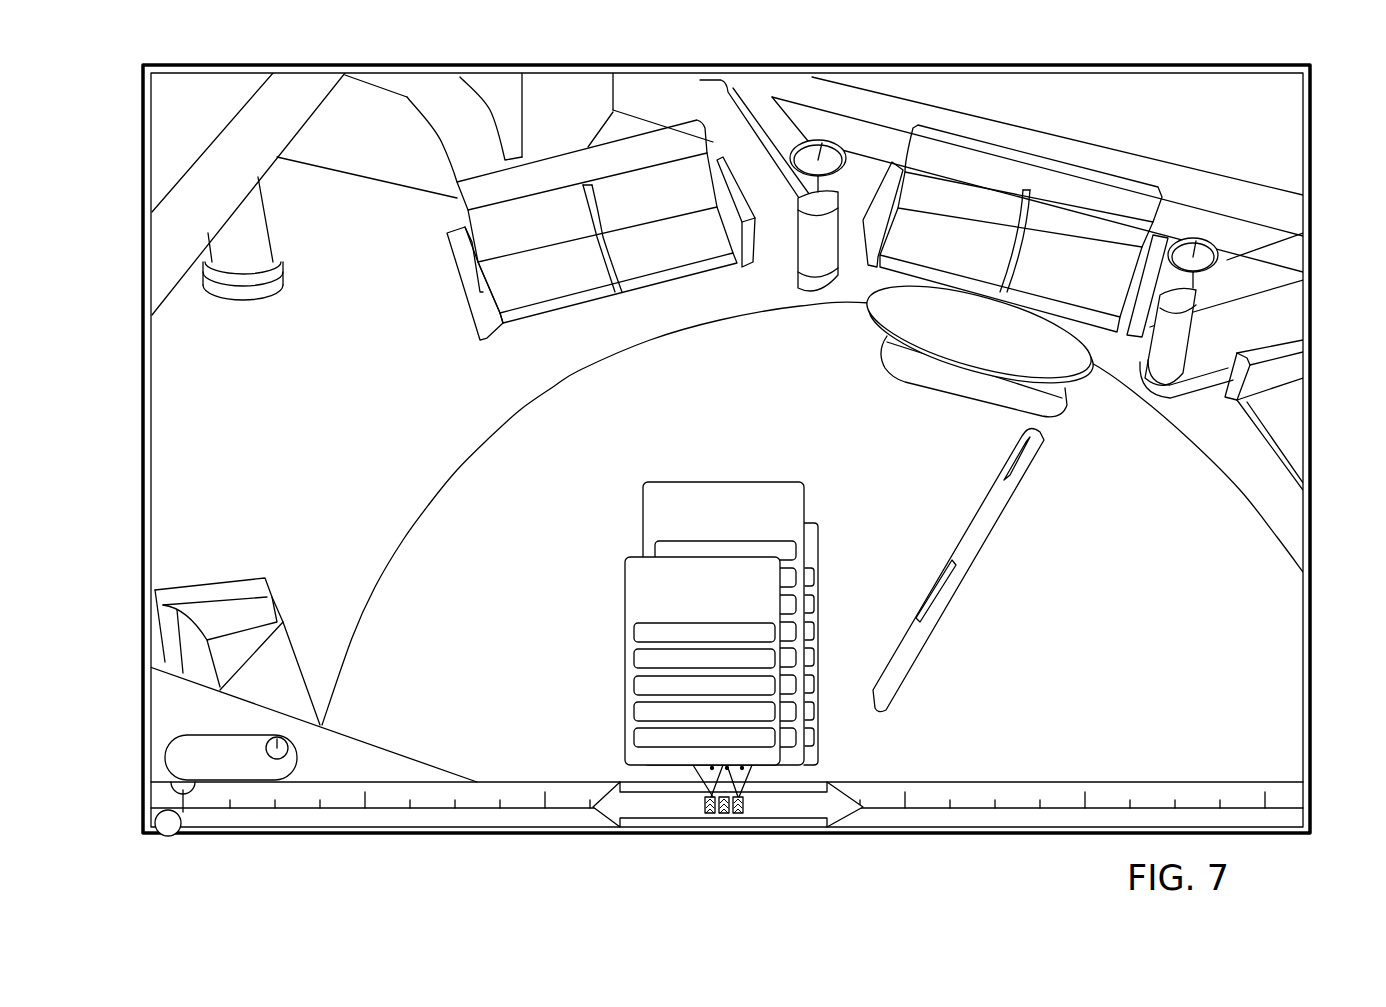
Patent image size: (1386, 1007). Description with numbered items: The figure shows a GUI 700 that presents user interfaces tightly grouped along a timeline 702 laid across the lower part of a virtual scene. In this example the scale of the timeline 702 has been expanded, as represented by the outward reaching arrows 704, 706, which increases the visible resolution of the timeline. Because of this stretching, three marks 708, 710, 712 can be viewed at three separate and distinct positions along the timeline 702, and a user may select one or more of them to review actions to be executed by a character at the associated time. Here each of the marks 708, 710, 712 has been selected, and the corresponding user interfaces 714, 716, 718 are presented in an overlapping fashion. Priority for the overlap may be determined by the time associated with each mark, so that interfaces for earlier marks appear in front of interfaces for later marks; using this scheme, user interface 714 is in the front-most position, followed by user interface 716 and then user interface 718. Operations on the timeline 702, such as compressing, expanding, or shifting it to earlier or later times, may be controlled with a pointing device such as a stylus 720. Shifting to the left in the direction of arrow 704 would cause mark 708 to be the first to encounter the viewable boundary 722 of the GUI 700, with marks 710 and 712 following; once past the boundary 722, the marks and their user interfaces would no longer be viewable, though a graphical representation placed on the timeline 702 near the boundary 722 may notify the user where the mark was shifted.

The GUI 700 is at (1303, 203).
The timeline 702 is at (140, 782).
The outward reaching arrow 704 is at (595, 808).
The outward reaching arrow 706 is at (856, 810).
The mark 708 is at (708, 814).
The mark 710 is at (723, 814).
The mark 712 is at (740, 814).
The user interface 714 is at (622, 590).
The user interface 716 is at (655, 483).
The user interface 718 is at (818, 535).
The stylus 720 is at (960, 527).
The viewable boundary 722 is at (164, 836).